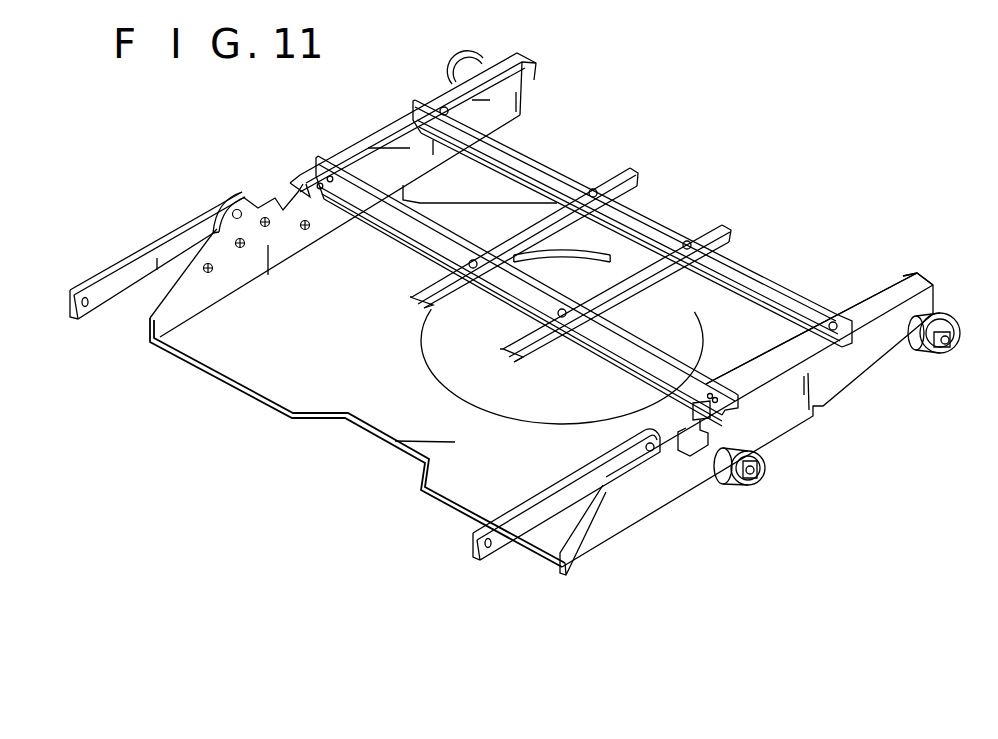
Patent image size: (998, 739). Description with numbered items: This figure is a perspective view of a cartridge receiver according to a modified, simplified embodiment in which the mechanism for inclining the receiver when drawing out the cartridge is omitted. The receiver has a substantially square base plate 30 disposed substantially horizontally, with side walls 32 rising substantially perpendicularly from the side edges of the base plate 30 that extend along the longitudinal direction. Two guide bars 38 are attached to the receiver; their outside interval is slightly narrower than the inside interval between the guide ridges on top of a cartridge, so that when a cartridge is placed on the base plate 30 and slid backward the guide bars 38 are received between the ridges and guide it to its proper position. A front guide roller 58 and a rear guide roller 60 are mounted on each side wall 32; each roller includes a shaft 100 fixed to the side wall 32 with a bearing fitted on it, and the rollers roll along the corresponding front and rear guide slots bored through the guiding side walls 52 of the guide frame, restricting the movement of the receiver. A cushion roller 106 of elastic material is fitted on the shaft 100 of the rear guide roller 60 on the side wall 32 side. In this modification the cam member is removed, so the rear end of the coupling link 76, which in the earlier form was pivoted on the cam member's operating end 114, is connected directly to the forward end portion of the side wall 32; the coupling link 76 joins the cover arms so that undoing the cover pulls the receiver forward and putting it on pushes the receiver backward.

The base plate 30 is at (268, 400).
The side walls 32 is at (917, 266).
The guide bars 38 is at (708, 225).
The guiding side walls 52 is at (840, 397).
The front guide roller 58 is at (765, 476).
The rear guide roller 60 is at (940, 355).
The coupling link 76 is at (136, 262).
The shaft 100 is at (752, 434).
The cushion roller 106 is at (937, 310).
The operating end 114 is at (258, 188).